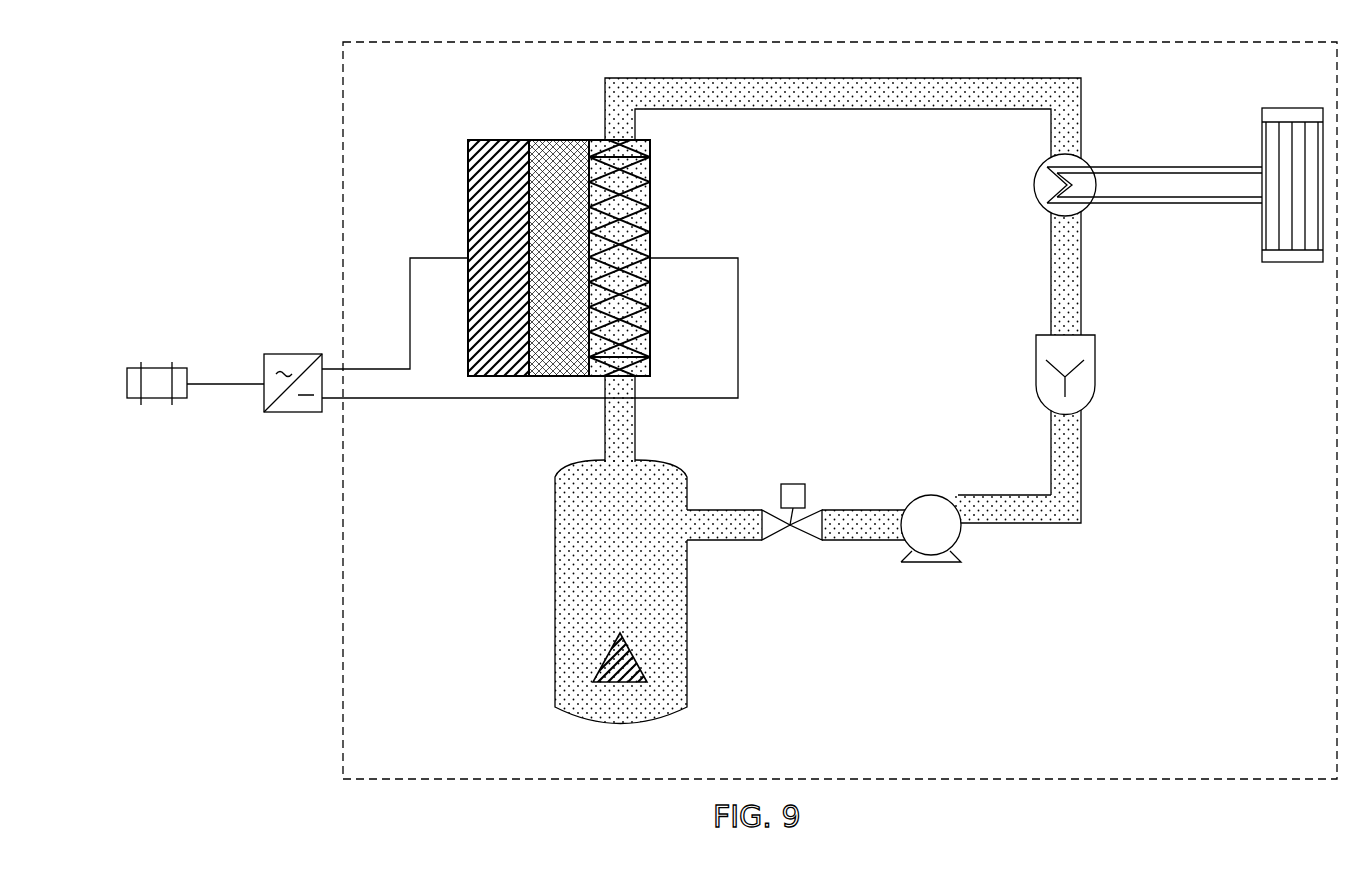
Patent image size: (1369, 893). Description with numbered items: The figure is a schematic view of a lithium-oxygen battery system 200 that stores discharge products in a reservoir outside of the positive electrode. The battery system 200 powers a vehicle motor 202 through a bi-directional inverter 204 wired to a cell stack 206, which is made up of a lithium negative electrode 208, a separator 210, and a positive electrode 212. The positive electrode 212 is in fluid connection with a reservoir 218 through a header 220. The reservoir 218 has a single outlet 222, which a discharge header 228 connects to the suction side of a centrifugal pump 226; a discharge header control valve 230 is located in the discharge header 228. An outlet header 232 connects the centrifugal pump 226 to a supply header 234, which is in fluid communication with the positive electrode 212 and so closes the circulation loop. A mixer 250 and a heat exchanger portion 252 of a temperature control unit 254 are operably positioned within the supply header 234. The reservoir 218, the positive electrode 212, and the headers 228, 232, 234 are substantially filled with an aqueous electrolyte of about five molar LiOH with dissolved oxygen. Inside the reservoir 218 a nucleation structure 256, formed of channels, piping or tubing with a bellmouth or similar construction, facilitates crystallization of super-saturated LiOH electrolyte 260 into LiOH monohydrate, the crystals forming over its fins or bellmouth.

The battery system 200 is at (342, 158).
The vehicle motor 202 is at (150, 368).
The bi-directional inverter 204 is at (300, 354).
The cell stack 206 is at (547, 244).
The lithium negative electrode 208 is at (465, 227).
The separator 210 is at (572, 140).
The positive electrode 212 is at (652, 208).
The reservoir 218 is at (567, 610).
The header 220 is at (605, 440).
The outlet 222 is at (702, 500).
The centrifugal pump 226 is at (922, 495).
The discharge header 228 is at (872, 542).
The discharge header control valve 230 is at (793, 483).
The outlet header 232 is at (1027, 495).
The supply header 234 is at (1082, 462).
The mixer 250 is at (1097, 360).
The heat exchanger portion 252 is at (1088, 167).
The temperature control unit 254 is at (1183, 100).
The nucleation structure 256 is at (606, 682).
The super-saturated LiOH electrolyte 260 is at (683, 95).